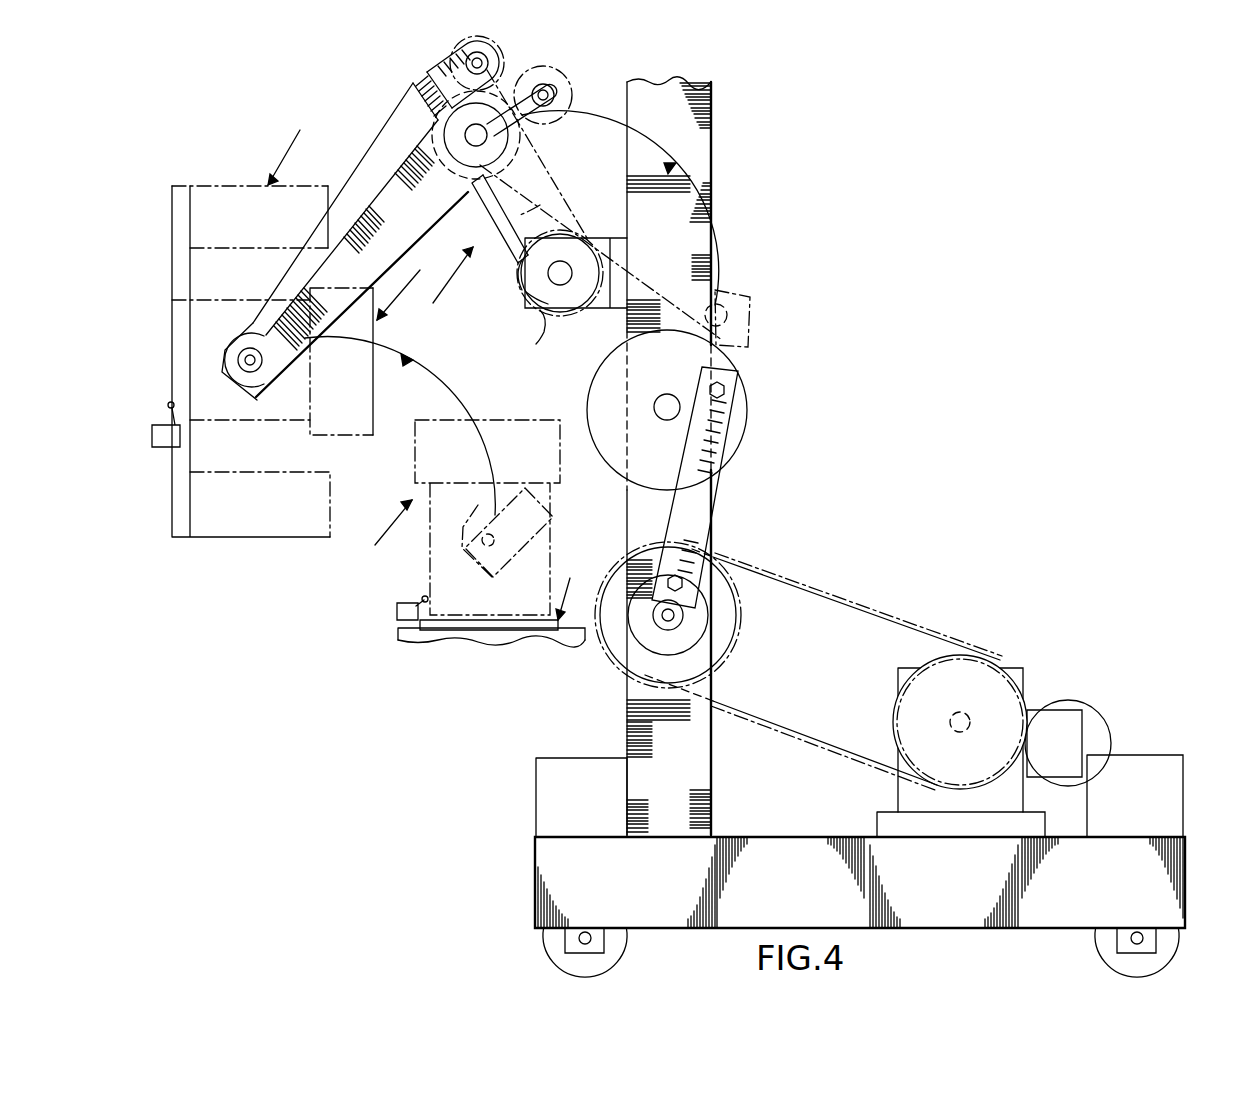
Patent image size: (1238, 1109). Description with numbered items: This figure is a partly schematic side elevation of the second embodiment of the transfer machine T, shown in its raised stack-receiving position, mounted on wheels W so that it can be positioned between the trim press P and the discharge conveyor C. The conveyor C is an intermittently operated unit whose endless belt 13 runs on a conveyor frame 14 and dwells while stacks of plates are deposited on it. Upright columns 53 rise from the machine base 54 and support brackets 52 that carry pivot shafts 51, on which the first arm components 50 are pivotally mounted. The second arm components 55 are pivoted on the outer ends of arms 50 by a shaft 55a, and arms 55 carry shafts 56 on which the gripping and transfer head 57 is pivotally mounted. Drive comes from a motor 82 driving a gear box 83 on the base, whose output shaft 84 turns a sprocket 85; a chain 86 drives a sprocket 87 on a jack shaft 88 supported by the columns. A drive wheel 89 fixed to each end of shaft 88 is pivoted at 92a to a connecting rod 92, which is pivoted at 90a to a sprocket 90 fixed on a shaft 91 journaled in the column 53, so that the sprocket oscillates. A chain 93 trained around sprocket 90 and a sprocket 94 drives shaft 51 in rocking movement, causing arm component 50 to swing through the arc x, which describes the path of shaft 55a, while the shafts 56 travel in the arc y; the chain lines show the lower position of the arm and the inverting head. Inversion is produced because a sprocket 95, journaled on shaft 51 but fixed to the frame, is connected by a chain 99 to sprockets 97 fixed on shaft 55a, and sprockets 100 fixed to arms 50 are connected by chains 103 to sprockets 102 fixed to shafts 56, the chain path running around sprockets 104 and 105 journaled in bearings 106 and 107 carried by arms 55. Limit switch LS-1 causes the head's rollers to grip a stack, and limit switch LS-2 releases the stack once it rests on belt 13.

The endless belt 13 is at (529, 632).
The conveyor frame 14 is at (402, 642).
The first arm component 50 is at (540, 206).
The pivot shaft 51 is at (560, 310).
The bracket 52 is at (608, 244).
The column 53 is at (704, 122).
The machine base 54 is at (967, 894).
The second arm component 55 is at (400, 222).
The shaft 55a is at (484, 138).
The shaft 56 is at (271, 364).
The transfer head 57 is at (435, 437).
The motor 82 is at (1092, 718).
The gear box 83 is at (1008, 670).
The output shaft 84 is at (958, 710).
The sprocket 85 is at (910, 656).
The chain 86 is at (798, 584).
The sprocket 87 is at (740, 622).
The jack shaft 88 is at (672, 619).
The drive wheel 89 is at (700, 622).
The sprocket 90 is at (746, 416).
The pivot 90a is at (726, 394).
The shaft 91 is at (660, 398).
The connecting rod 92 is at (706, 458).
The pivot 92a is at (678, 578).
The chain 93 is at (665, 298).
The sprocket 94 is at (540, 328).
The sprocket 95 is at (528, 292).
The sprocket 97 is at (510, 151).
The chain 99 is at (498, 246).
The sprocket 100 is at (482, 210).
The sprocket 102 is at (239, 373).
The chain 103 is at (364, 158).
The sprocket 104 is at (563, 90).
The sprocket 105 is at (502, 64).
The bearing 106 is at (555, 96).
The bearing 107 is at (458, 58).
The wheels W is at (624, 942).
The trim press P is at (251, 319).
The discharge conveyor C is at (568, 585).
The arc x is at (658, 132).
The arc y is at (432, 374).
The transfer arm assembly T is at (447, 282).
The limit switch LS-1 is at (158, 448).
The limit switch LS-2 is at (396, 620).